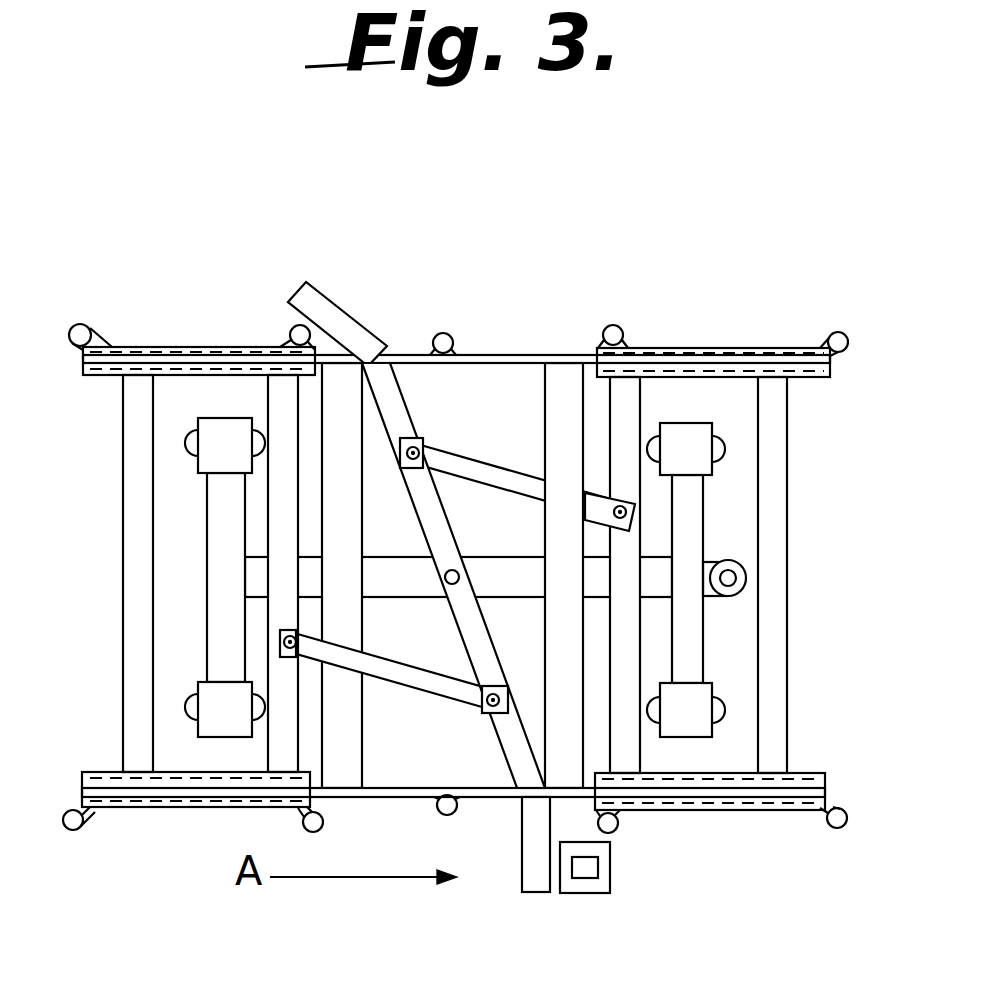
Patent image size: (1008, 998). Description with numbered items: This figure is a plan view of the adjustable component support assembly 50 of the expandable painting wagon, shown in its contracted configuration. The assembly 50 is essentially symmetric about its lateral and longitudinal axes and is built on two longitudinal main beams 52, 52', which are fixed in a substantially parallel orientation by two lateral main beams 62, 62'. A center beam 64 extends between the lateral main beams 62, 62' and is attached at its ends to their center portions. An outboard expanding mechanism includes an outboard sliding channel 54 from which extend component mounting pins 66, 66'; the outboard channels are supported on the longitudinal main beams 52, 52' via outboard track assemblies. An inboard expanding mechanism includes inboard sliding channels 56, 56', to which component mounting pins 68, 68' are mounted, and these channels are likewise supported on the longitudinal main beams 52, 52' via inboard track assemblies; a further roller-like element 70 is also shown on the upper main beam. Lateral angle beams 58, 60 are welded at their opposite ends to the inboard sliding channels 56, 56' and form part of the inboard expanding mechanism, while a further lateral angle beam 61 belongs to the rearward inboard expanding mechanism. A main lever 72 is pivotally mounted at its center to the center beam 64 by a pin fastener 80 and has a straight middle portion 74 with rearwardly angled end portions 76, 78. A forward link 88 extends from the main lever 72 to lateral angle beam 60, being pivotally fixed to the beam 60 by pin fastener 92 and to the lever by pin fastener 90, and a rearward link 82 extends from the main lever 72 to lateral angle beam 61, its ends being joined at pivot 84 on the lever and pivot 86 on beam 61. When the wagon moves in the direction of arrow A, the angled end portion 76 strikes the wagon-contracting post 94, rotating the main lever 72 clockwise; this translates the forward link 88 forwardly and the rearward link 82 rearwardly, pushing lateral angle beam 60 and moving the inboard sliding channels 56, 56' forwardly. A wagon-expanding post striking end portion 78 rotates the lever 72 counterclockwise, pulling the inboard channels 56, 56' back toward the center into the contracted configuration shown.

The adjustable component support assembly 50 is at (118, 293).
The longitudinal main beam 52 is at (456, 524).
The longitudinal main beam 52' is at (453, 853).
The outboard sliding channel 54 is at (778, 344).
The inboard sliding channel 56 is at (807, 575).
The inboard sliding channel 56' is at (502, 573).
The lateral angle beam 58 is at (788, 525).
The lateral angle beam 60 is at (640, 388).
The lateral angle beam 61 is at (273, 398).
The lateral main beam 62 is at (593, 314).
The lateral main beam 62' is at (198, 341).
The center beam 64 is at (442, 605).
The component mounting pin 66 is at (851, 314).
The component mounting pin 66' is at (848, 860).
The component mounting pin 68 is at (658, 311).
The component mounting pin 68' is at (382, 833).
The roller 70 is at (452, 336).
The main lever 72 is at (517, 901).
The straight middle portion 74 is at (405, 357).
The rearwardly angled end portion 76 is at (521, 853).
The rearwardly angled end portion 78 is at (340, 312).
The pin fastener 80 is at (460, 567).
The rearward link 82 is at (424, 693).
The pivot pin 84 is at (487, 718).
The pivot pin 86 is at (283, 642).
The forward link 88 is at (498, 473).
The pin fastener 90 is at (418, 448).
The pin fastener 92 is at (638, 500).
The wagon-contracting post 94 is at (597, 897).